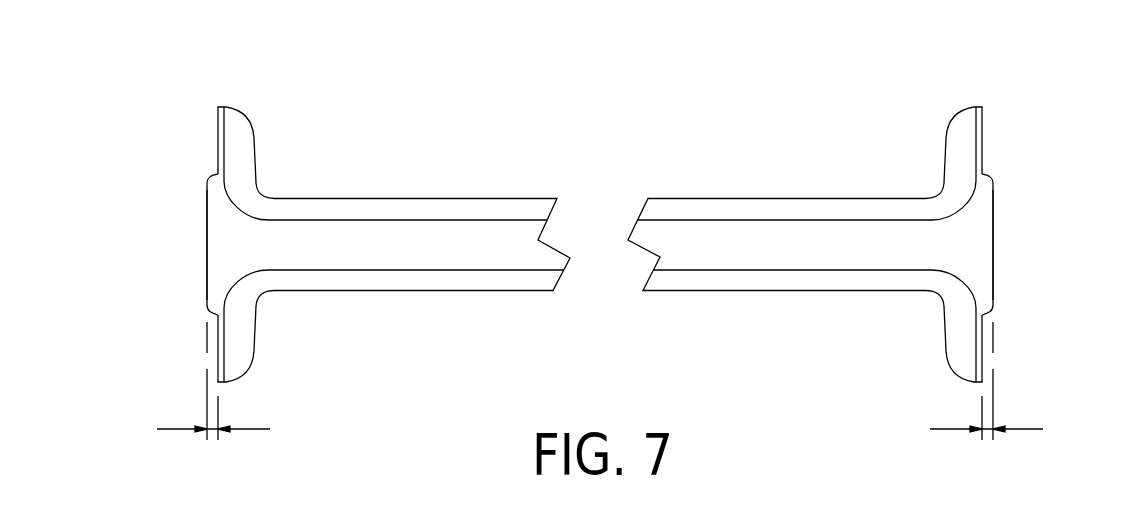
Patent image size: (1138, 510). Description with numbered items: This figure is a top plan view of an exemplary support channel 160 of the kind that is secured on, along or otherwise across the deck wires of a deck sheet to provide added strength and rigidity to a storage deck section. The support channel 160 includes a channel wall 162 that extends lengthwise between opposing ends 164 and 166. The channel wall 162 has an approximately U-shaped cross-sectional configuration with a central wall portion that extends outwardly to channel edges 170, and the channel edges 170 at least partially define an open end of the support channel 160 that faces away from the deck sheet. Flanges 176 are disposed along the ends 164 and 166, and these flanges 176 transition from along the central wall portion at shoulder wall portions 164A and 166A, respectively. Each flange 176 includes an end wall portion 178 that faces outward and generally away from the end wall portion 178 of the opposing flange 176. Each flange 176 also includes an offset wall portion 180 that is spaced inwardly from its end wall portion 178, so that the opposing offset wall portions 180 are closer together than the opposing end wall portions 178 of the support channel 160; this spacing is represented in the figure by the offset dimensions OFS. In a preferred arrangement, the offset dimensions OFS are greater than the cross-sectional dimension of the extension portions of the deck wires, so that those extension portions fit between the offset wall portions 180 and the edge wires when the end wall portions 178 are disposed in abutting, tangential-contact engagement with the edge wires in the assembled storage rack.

The support channel 160 is at (676, 126).
The channel wall 162 is at (427, 220).
The end 164 is at (262, 122).
The shoulder wall portion 164A is at (237, 247).
The end 166 is at (926, 120).
The shoulder wall portion 166A is at (973, 251).
The channel edge 170 is at (737, 198).
The flange 176 is at (264, 296).
The end wall portion 178 is at (207, 202).
The offset wall portion 180 is at (218, 150).
The offset dimension OFS is at (172, 428).